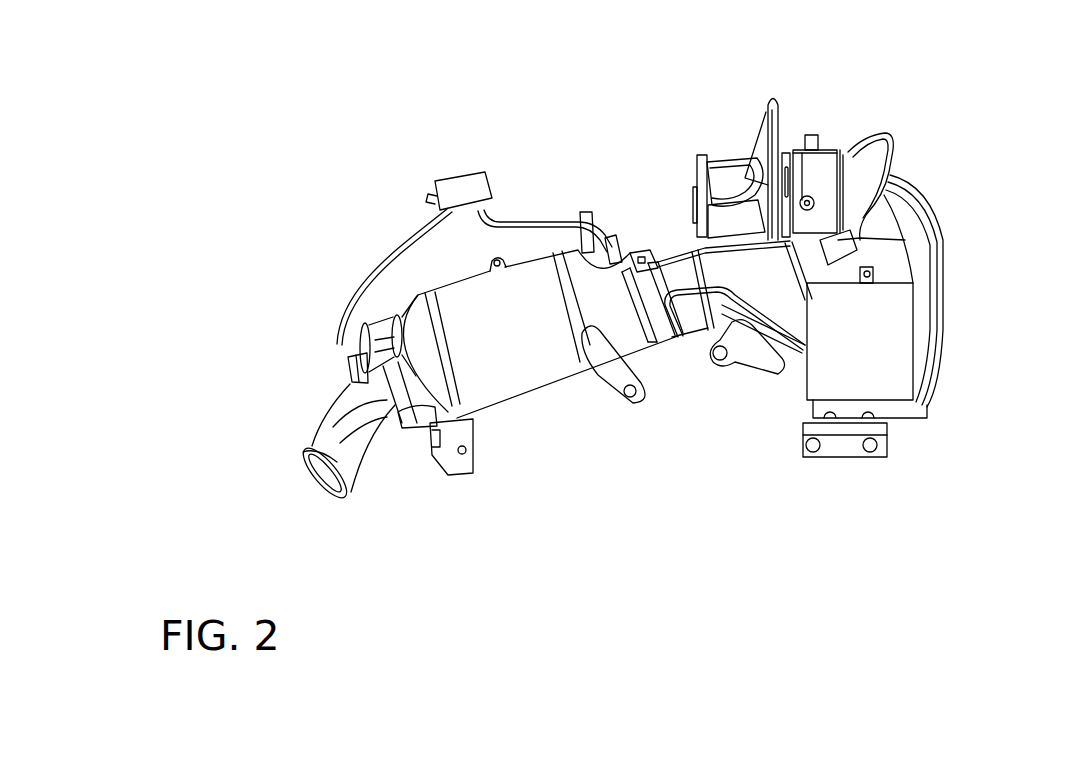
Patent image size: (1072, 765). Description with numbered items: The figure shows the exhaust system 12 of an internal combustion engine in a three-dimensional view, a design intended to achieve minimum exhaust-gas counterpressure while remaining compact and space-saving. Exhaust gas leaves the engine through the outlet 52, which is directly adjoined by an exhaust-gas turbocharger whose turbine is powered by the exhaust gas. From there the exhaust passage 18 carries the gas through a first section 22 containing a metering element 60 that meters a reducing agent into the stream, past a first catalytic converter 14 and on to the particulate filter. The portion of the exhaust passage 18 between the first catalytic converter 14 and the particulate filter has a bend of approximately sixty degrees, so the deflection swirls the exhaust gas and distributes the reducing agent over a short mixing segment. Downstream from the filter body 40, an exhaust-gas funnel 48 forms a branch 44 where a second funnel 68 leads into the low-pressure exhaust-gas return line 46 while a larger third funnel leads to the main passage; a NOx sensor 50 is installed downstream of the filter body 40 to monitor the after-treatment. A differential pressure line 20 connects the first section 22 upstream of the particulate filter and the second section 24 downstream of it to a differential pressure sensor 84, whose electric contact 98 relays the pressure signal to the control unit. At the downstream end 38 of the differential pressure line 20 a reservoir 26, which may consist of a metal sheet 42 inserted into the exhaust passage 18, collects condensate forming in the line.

The exhaust system 12 is at (315, 108).
The first catalytic converter 14 is at (893, 388).
The exhaust passage 18 is at (382, 410).
The differential pressure line 20 is at (540, 218).
The first section of the exhaust passage 22 is at (742, 269).
The second section of the exhaust passage 24 is at (324, 483).
The reservoir 26 is at (362, 378).
The downstream end of the differential pressure line 38 is at (350, 362).
The filter body 40 is at (458, 303).
The metal sheet 42 is at (648, 313).
The branch 44 is at (443, 383).
The low-pressure exhaust-gas return line 46 is at (363, 335).
The exhaust-gas funnel 48 is at (421, 395).
The NOx sensor 50 is at (308, 445).
The outlet 52 is at (702, 168).
The metering element 60 is at (845, 252).
The second funnel 68 is at (412, 327).
The differential pressure sensor 84 is at (461, 178).
The electric contact 98 is at (430, 197).